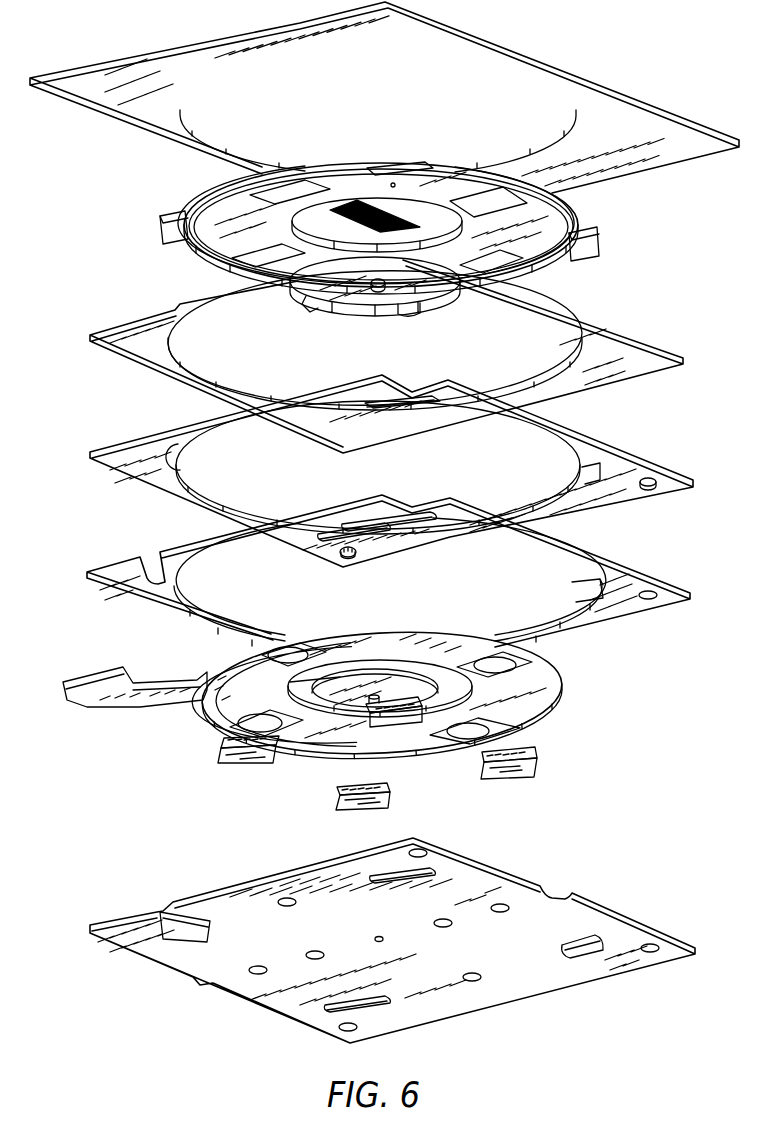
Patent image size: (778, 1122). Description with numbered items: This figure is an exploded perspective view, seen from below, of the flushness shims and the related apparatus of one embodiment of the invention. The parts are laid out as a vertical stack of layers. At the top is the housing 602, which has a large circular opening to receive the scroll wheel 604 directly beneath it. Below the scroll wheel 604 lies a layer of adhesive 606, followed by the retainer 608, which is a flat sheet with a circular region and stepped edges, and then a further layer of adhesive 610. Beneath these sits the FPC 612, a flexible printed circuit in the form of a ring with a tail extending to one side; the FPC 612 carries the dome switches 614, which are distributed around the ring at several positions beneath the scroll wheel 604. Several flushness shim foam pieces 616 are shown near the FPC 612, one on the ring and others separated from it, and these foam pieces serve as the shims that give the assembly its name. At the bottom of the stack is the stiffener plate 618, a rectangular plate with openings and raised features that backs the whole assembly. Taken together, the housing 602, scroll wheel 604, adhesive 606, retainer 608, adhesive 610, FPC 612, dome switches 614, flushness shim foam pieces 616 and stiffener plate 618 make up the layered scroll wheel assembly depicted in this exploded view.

The housing 602 is at (629, 97).
The scroll wheel 604 is at (577, 233).
The adhesive 606 is at (648, 347).
The retainer 608 is at (653, 460).
The adhesive 610 is at (645, 582).
The FPC 612 is at (356, 699).
The dome switches 614 is at (496, 662).
The flushness shim foam pieces 616 is at (412, 720).
The stiffener plate 618 is at (657, 927).